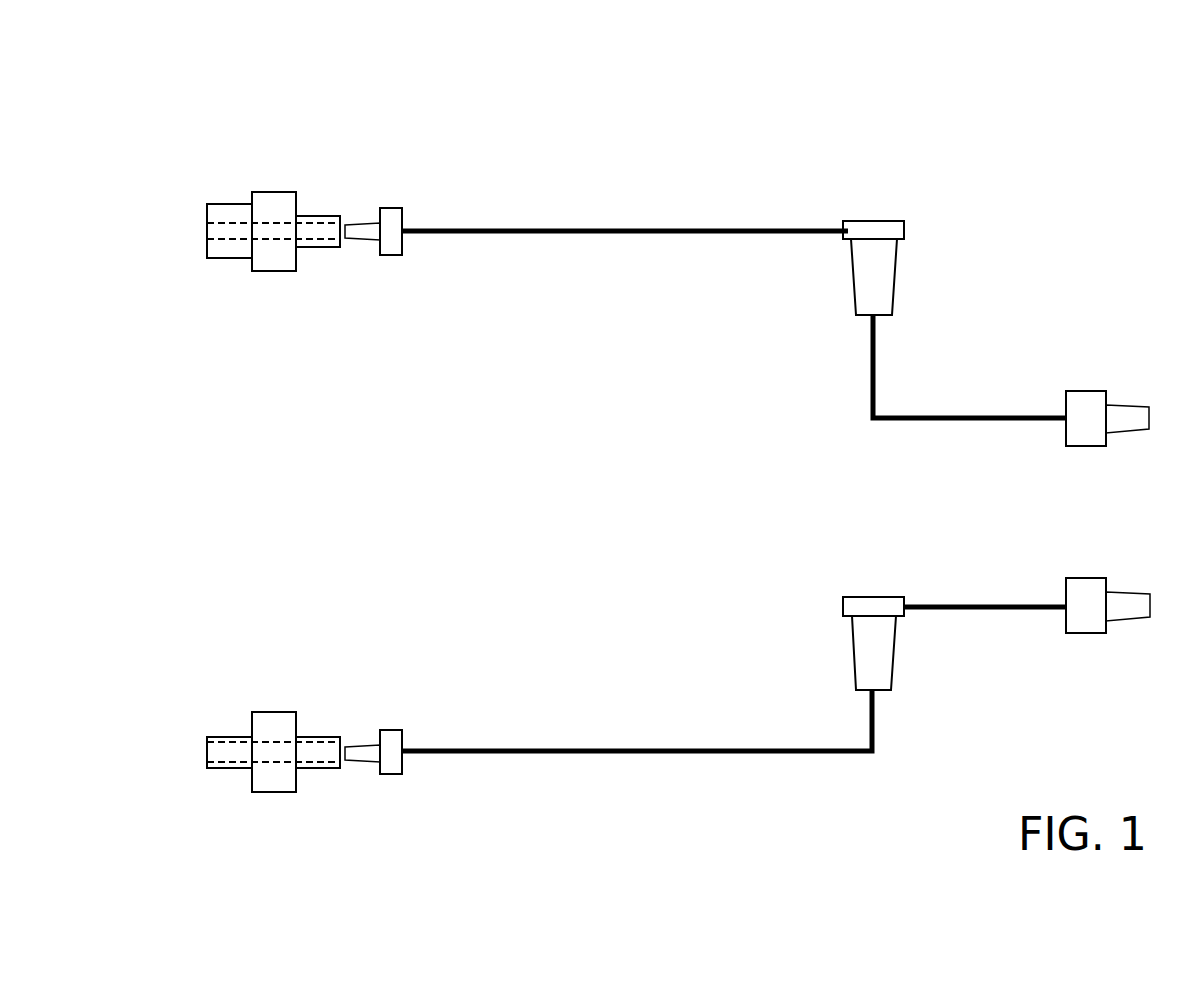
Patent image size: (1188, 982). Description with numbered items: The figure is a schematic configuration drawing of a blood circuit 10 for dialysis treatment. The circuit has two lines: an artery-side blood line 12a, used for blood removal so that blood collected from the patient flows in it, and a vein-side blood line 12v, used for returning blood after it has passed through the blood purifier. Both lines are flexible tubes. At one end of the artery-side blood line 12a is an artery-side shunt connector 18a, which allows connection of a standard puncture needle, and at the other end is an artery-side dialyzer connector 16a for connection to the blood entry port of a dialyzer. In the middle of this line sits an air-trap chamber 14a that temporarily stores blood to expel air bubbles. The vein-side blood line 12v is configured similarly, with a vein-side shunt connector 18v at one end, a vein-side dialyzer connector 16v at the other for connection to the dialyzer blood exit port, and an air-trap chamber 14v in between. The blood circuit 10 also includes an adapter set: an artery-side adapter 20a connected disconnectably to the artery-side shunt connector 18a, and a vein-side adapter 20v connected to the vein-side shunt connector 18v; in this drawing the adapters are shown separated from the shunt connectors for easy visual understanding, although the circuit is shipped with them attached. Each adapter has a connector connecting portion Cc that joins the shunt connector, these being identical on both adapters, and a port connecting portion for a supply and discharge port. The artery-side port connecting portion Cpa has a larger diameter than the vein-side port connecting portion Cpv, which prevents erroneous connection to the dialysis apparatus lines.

The blood circuit 10 is at (577, 115).
The artery-side blood line 12a is at (638, 228).
The vein-side blood line 12v is at (638, 748).
The air-trap chamber 14a is at (897, 277).
The air-trap chamber 14v is at (852, 634).
The artery-side dialyzer connector 16a is at (1086, 390).
The vein-side dialyzer connector 16v is at (1082, 578).
The artery-side shunt connector 18a is at (392, 255).
The vein-side shunt connector 18v is at (392, 774).
The artery-side adapter 20a is at (278, 290).
The vein-side adapter 20v is at (272, 811).
The port connecting portion Cpa is at (232, 202).
The port connecting portion Cpv is at (232, 737).
The connector connecting portion Cc is at (316, 215).